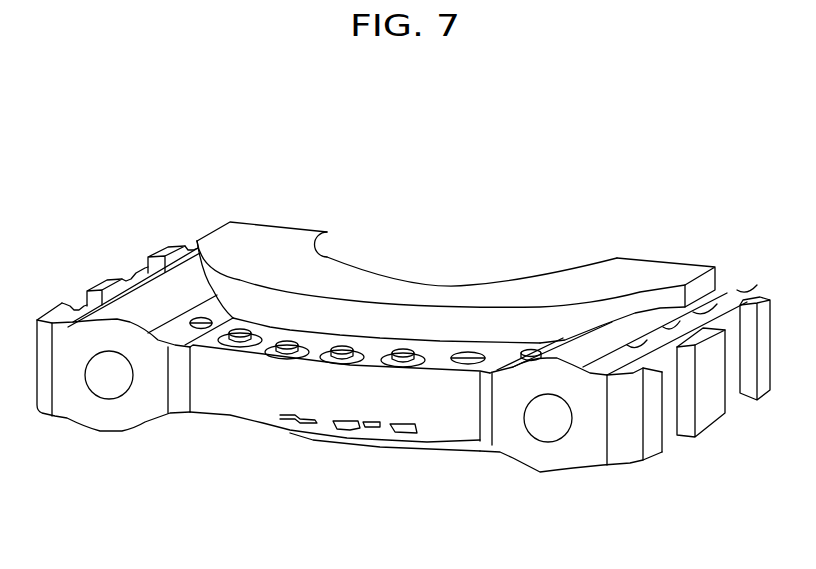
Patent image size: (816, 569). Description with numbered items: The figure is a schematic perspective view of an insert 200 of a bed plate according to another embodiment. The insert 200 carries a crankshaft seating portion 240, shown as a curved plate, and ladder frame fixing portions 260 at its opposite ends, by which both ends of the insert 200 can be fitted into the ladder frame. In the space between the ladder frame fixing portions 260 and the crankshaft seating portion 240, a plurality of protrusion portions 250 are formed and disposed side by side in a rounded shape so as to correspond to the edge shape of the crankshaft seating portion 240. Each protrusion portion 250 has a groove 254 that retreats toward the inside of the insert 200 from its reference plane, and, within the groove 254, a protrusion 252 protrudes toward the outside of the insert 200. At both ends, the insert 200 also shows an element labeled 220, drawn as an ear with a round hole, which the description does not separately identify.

The insert 200 is at (427, 125).
The mounting ear with hole 220 is at (108, 378).
The crankshaft seating portion 240 is at (538, 287).
The protrusion portion 250 is at (490, 203).
The washer pad 252 is at (407, 353).
The groove 254 is at (402, 353).
The ladder frame fixing portion 260 is at (707, 407).